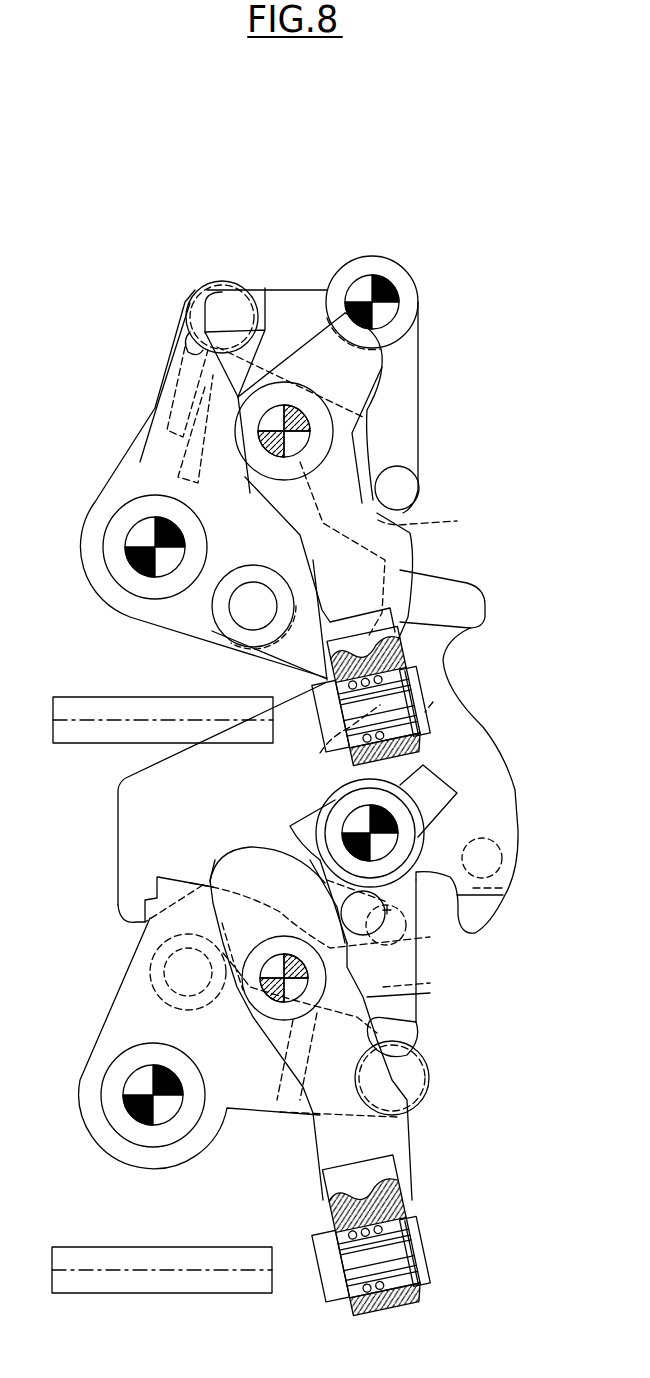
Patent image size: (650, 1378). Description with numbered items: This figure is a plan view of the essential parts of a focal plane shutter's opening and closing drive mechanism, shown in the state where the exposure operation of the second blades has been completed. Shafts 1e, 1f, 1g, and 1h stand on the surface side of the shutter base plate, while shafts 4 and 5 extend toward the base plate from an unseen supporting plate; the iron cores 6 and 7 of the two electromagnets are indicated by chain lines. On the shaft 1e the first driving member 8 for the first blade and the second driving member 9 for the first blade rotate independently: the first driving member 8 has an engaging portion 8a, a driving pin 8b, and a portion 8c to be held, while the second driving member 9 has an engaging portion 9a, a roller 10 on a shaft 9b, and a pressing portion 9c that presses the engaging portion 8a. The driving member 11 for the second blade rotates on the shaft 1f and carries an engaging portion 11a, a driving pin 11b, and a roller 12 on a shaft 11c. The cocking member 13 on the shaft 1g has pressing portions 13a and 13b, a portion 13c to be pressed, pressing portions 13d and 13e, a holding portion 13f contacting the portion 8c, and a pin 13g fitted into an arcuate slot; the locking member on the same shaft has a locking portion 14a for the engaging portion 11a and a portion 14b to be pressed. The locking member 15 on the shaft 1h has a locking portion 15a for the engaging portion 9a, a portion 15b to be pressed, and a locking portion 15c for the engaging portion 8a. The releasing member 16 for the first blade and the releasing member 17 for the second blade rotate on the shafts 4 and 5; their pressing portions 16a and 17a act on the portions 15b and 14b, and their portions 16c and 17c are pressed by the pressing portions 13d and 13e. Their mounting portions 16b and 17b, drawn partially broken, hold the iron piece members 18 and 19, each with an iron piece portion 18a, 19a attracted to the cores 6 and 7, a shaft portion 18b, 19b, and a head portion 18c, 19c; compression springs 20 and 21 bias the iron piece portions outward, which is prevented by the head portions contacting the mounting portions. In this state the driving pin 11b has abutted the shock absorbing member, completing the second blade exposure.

The shaft 1e is at (150, 543).
The shaft 1f is at (146, 1084).
The shaft 1g is at (358, 821).
The shaft 1h is at (362, 294).
The shaft 4 is at (300, 442).
The shaft 5 is at (273, 968).
The iron core 6 is at (120, 717).
The iron core 7 is at (137, 1263).
The first driving member for the first blade 8 is at (205, 637).
The engaging portion 8a is at (193, 373).
The driving pin 8b is at (225, 294).
The portion to be held 8c is at (307, 657).
The second driving member for the first blade 9 is at (100, 505).
The engaging portion 9a is at (190, 327).
The shaft 9b is at (257, 600).
The pressing portion 9c is at (193, 452).
The roller 10 is at (247, 570).
The driving member for the second blade 11 is at (92, 1070).
The engaging portion 11a is at (165, 886).
The driving pin 11b is at (413, 1085).
The shaft 11c is at (187, 970).
The roller 12 is at (158, 990).
The cocking member 13 is at (463, 827).
The pressing portion 13a is at (468, 590).
The pressing portion 13b is at (133, 842).
The portion to be pressed 13c is at (480, 920).
The pressing portion 13d is at (443, 800).
The pressing portion 13e is at (295, 840).
The holding portion 13f is at (433, 702).
The pin 13g is at (482, 858).
The locking portion 14a is at (407, 1070).
The portion to be pressed 14b is at (417, 1037).
The locking member 15 is at (403, 355).
The locking portion 15a is at (457, 521).
The portion to be pressed 15b is at (408, 493).
The locking portion 15c is at (267, 290).
The releasing member for the first blade 16 is at (353, 377).
The pressing portion 16a is at (370, 455).
The mounting portion 16b is at (490, 615).
The portion to be pressed 16c is at (320, 753).
The releasing member for the second blade 17 is at (400, 1145).
The pressing portion 17a is at (416, 1020).
The mounting portion 17b is at (337, 1182).
The portion to be pressed 17c is at (392, 910).
The iron piece member 18 is at (436, 691).
The iron piece portion 18a is at (333, 712).
The shaft portion 18b is at (405, 717).
The head portion 18c is at (418, 738).
The iron piece member 19 is at (443, 1250).
The iron piece portion 19a is at (333, 1270).
The shaft portion 19b is at (395, 1263).
The head portion 19c is at (420, 1275).
The compression spring 20 is at (412, 668).
The compression spring 21 is at (399, 1198).